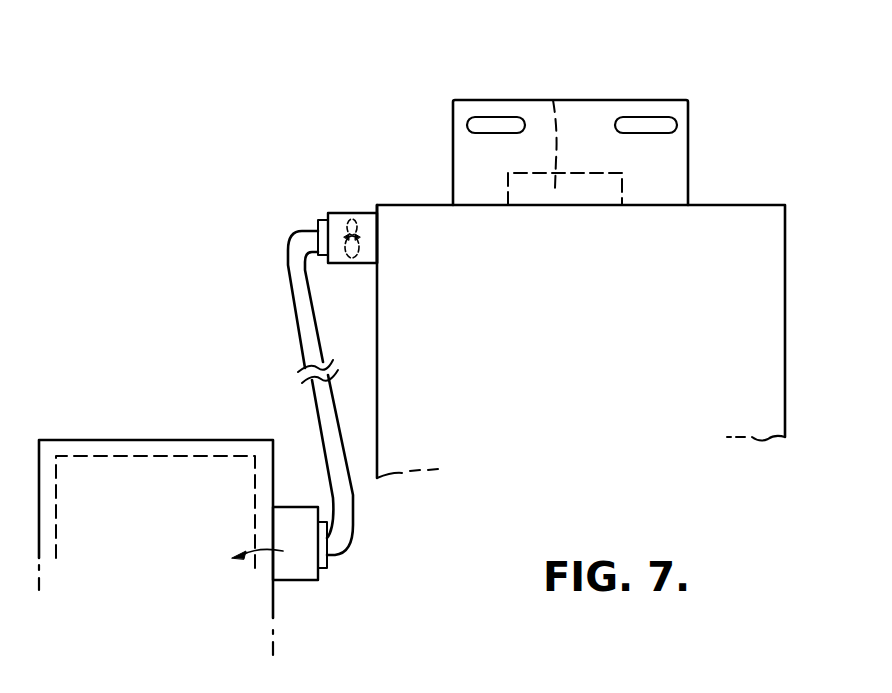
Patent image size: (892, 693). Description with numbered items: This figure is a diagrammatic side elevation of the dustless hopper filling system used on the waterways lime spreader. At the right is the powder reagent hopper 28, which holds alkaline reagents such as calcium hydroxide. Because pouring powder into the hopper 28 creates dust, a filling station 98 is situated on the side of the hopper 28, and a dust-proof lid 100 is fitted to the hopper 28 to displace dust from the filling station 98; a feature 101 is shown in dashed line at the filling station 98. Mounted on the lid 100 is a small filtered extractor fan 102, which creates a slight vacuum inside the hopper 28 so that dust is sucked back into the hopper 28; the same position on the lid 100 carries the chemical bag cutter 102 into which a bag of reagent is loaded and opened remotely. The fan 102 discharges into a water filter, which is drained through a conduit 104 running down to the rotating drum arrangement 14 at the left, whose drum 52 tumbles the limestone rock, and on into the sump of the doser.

The rotating drum arrangement 14 is at (181, 442).
The powder reagent hopper 28 is at (591, 333).
The drum 52 is at (91, 474).
The filling station 98 is at (598, 117).
The dust-proof lid 100 is at (407, 205).
The mounting slot / connection 101 is at (555, 100).
The filtered extractor fan 102 is at (347, 213).
The conduit 104 is at (295, 303).